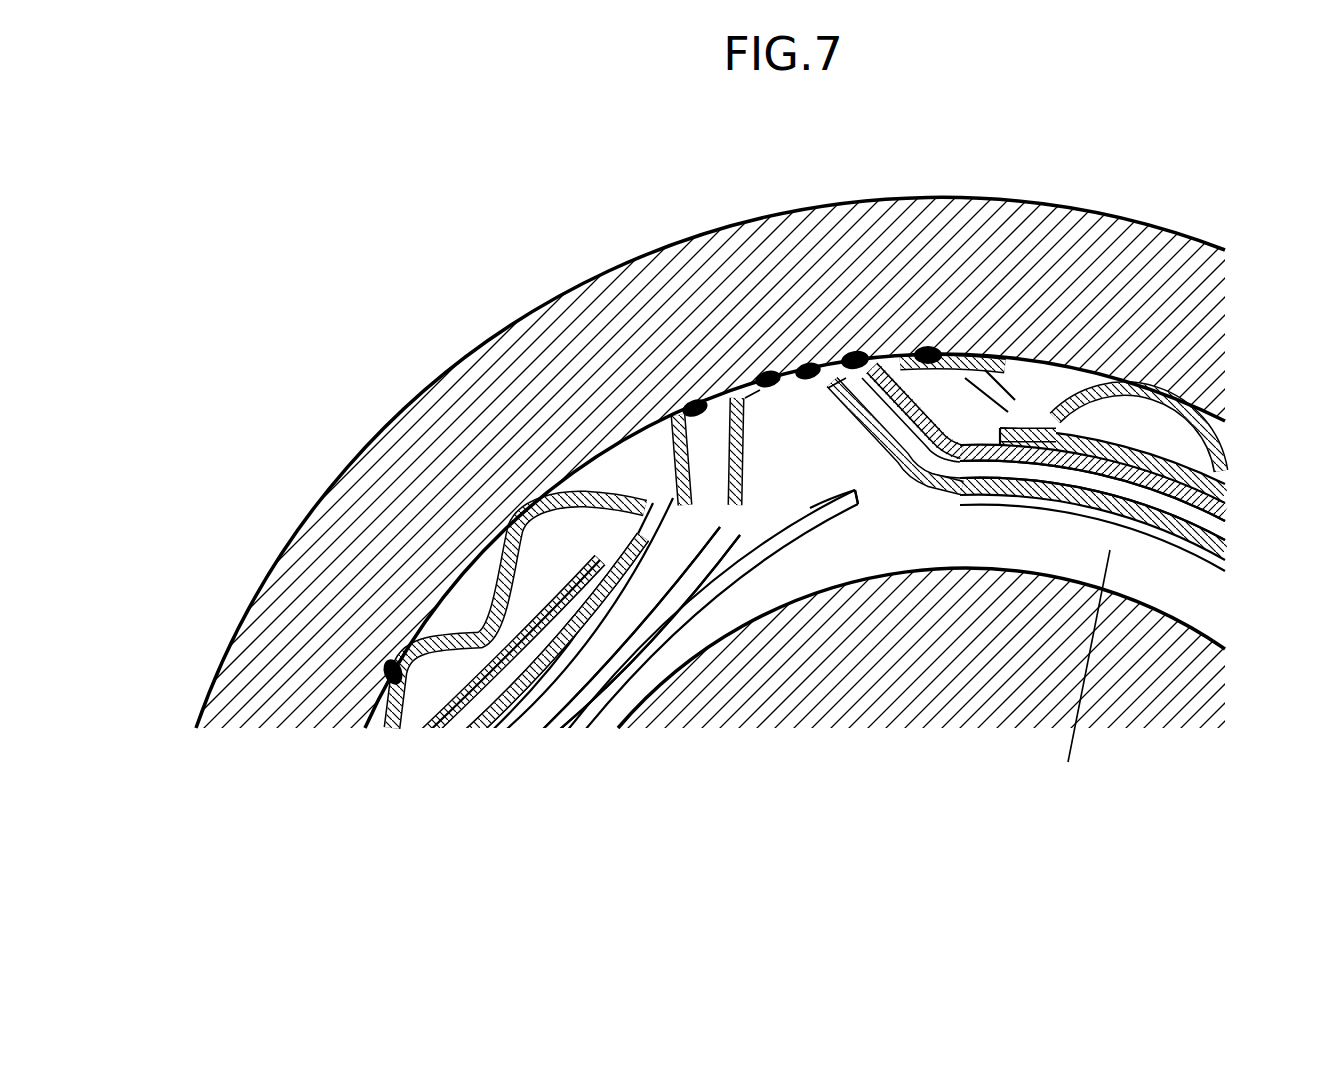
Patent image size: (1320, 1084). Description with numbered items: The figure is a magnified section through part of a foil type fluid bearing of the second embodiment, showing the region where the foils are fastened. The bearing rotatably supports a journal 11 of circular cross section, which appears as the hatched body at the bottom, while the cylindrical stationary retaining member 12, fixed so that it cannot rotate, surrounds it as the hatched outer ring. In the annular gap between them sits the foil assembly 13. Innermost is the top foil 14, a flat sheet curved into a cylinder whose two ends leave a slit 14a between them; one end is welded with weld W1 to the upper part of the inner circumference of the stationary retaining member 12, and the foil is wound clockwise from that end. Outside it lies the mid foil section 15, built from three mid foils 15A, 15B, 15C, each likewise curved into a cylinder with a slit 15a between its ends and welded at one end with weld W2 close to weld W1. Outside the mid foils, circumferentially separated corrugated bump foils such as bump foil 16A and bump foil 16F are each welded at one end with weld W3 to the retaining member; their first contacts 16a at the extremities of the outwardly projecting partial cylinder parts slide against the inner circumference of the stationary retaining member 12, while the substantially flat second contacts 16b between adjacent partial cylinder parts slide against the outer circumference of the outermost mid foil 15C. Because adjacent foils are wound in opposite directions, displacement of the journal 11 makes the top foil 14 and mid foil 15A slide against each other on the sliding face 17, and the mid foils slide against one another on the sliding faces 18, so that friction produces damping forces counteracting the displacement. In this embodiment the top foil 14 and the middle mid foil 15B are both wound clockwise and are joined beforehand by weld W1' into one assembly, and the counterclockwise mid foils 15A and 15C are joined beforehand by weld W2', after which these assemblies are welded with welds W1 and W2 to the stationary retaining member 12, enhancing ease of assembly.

The journal 11 is at (1008, 690).
The stationary retaining member 12 is at (620, 305).
The foil assembly 13 is at (1110, 547).
The top foil 14 is at (772, 528).
The slit 14a is at (877, 490).
The mid foil section 15 is at (790, 798).
The mid foil 15A is at (700, 553).
The mid foil 15B is at (613, 620).
The mid foil 15C is at (560, 637).
The slit 15a is at (685, 517).
The bump foil 16A is at (457, 640).
The bump foil 16F is at (1128, 393).
The first contact 16a is at (530, 503).
The second contact 16b is at (493, 727).
The sliding face 17 is at (1137, 537).
The sliding face 18 is at (1218, 565).
The weld W1 is at (787, 261).
The weld W2 is at (787, 264).
The weld W3 is at (927, 348).
The weld W1' is at (812, 411).
The weld W2' is at (793, 437).